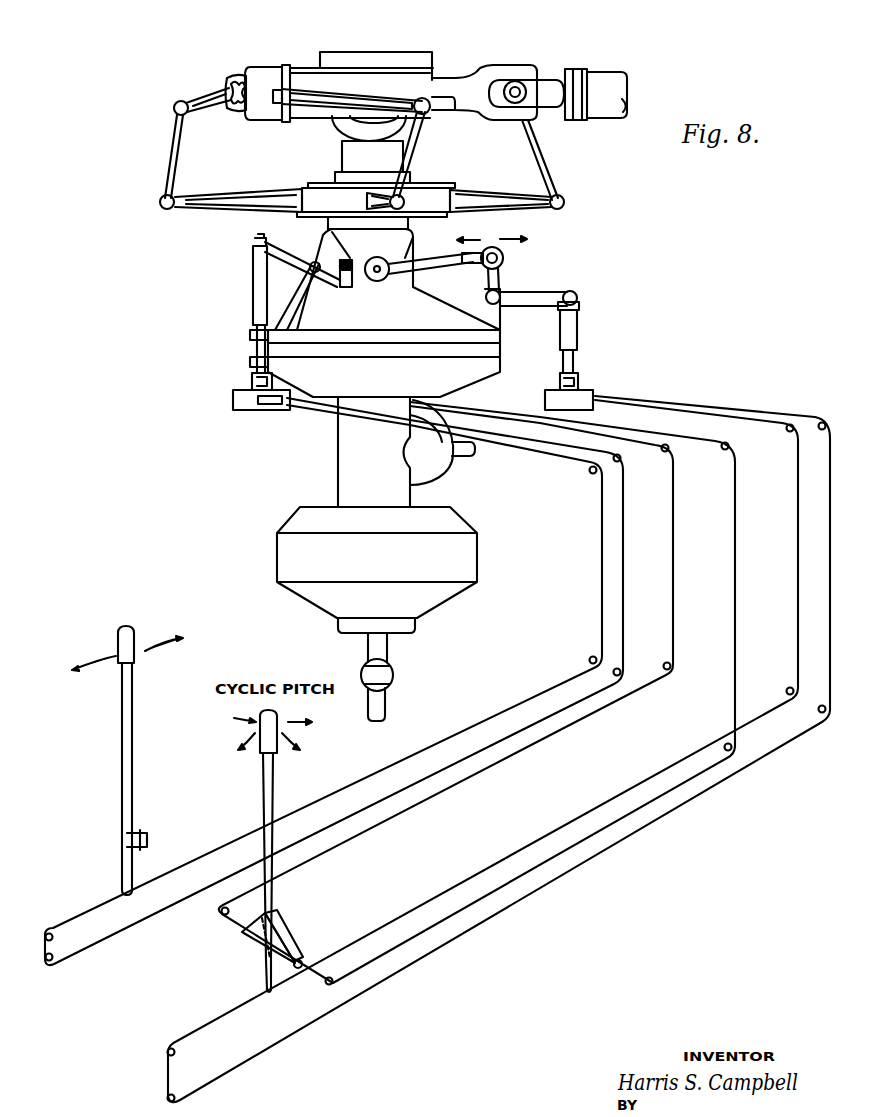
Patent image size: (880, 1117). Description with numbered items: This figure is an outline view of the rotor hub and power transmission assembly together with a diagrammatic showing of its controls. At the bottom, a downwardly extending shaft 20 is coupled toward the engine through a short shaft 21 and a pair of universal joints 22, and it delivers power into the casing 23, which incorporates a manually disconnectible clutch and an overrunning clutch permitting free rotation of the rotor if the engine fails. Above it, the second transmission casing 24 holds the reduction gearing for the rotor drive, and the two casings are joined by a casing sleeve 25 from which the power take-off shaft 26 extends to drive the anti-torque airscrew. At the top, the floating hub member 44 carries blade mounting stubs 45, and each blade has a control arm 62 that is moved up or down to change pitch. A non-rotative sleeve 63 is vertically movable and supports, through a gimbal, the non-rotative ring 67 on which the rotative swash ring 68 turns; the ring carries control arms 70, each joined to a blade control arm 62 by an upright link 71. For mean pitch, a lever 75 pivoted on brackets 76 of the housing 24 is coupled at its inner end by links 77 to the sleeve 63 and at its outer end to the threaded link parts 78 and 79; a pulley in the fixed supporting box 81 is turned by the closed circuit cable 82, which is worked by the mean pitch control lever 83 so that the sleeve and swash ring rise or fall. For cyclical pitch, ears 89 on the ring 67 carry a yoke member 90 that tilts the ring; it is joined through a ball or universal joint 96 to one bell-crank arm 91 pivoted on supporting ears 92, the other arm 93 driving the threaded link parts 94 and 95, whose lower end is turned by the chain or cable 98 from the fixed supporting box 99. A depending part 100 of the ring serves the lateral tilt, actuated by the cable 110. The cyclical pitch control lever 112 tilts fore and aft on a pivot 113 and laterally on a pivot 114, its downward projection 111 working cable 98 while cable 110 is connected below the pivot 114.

The downwardly extending shaft 20 is at (380, 650).
The short shaft 21 is at (382, 703).
The universal joints 22 is at (391, 674).
The casing 23 is at (282, 544).
The second transmission casing 24 is at (384, 352).
The casing sleeve 25 is at (350, 448).
The power take-off shaft 26 is at (468, 450).
The floating hub member 44 is at (388, 60).
The blade mounting stubs 45 is at (459, 78).
The control arm 62 is at (317, 90).
The non-rotative sleeve 63 is at (407, 247).
The non-rotative ring 67 is at (433, 228).
The rotative swash ring 68 is at (427, 193).
The control arms 70 is at (240, 205).
The upright link 71 is at (172, 150).
The lever 75 is at (288, 240).
The brackets 76 is at (323, 300).
The links 77 is at (353, 283).
The upper link part 78 is at (253, 287).
The lower link part 79 is at (257, 349).
The fixed supporting box 81 is at (236, 401).
The closed circuit cable 82 is at (558, 442).
The mean pitch control lever 83 is at (133, 706).
The ears 89 is at (377, 257).
The yoke member 90 is at (425, 269).
The bell-crank arm 91 is at (501, 288).
The supporting ears 92 is at (498, 318).
The bell-crank arm 93 is at (535, 295).
The link part 94 is at (578, 326).
The link part 95 is at (575, 358).
The ball or universal joint 96 is at (503, 255).
The longitudinal control cable 98 is at (830, 532).
The fixed supporting box 99 is at (545, 399).
The depending part 100 is at (302, 258).
The cable 110 is at (673, 592).
The downward projection 111 is at (266, 969).
The cyclical pitch control lever 112 is at (266, 791).
The pivot 113 is at (303, 962).
The pivot 114 is at (243, 934).